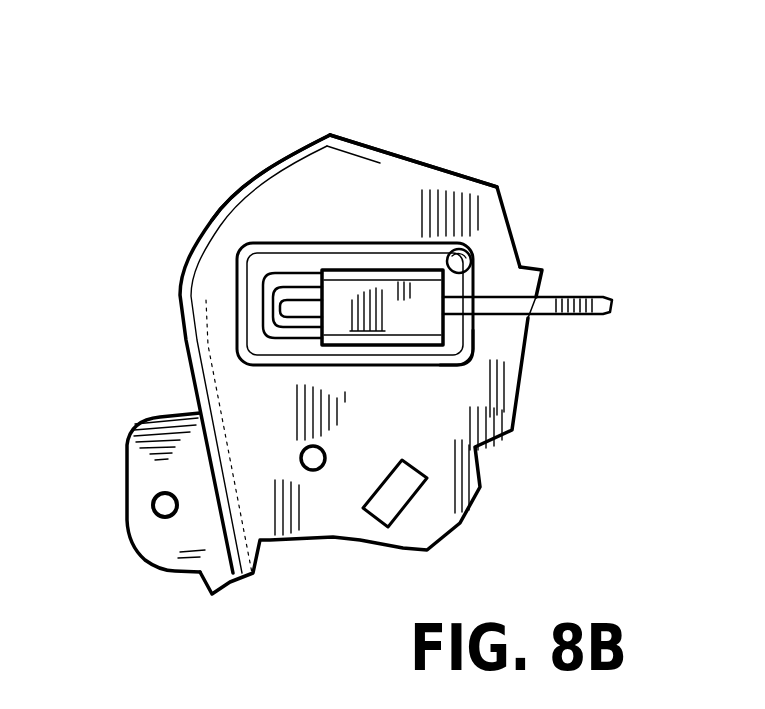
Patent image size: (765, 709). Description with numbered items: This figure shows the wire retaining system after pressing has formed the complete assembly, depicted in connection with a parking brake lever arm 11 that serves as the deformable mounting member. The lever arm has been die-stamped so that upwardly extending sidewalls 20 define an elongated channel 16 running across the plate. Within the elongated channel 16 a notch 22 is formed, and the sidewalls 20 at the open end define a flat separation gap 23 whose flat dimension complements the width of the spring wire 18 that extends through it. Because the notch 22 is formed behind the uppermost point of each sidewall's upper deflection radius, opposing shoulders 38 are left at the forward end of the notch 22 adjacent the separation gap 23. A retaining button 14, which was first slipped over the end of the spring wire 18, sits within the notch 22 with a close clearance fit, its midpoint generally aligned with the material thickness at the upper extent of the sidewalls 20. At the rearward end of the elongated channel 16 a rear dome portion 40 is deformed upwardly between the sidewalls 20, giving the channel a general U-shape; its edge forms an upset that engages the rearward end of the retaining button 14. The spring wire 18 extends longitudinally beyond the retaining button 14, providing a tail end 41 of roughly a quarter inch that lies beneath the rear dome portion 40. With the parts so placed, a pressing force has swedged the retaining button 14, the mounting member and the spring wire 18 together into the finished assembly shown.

The parking brake lever arm 11 is at (510, 428).
The retaining button 14 is at (421, 290).
The elongated channel 16 is at (272, 236).
The spring wire 18 is at (603, 296).
The sidewalls 20 is at (470, 353).
The notch 22 is at (247, 275).
The flat separation gap 23 is at (462, 287).
The opposing shoulders 38 is at (527, 333).
The rear dome portion 40 is at (280, 317).
The tail end 41 is at (307, 328).